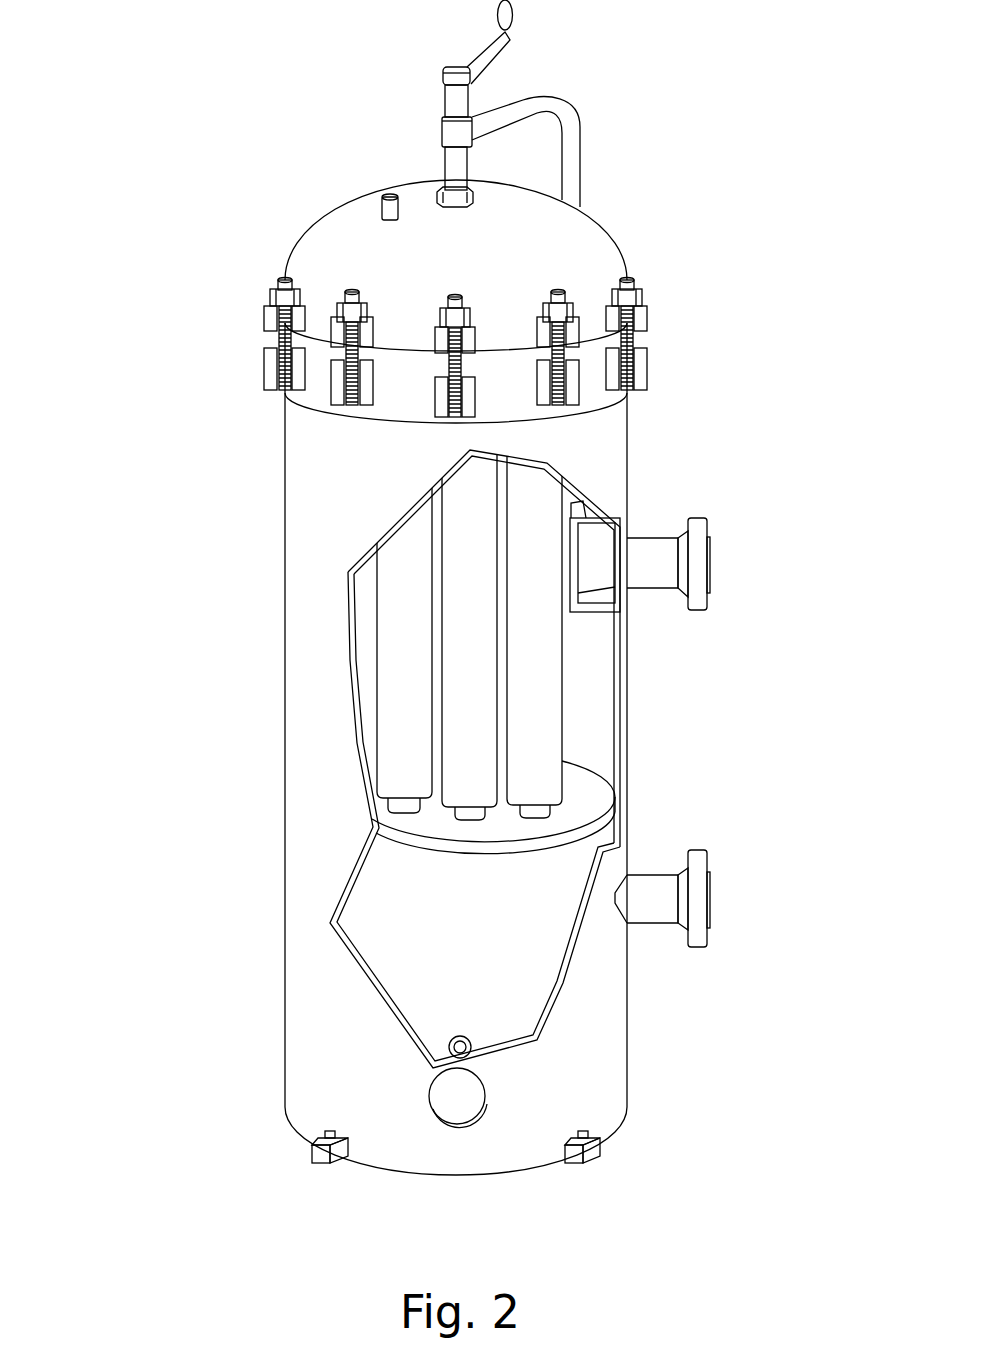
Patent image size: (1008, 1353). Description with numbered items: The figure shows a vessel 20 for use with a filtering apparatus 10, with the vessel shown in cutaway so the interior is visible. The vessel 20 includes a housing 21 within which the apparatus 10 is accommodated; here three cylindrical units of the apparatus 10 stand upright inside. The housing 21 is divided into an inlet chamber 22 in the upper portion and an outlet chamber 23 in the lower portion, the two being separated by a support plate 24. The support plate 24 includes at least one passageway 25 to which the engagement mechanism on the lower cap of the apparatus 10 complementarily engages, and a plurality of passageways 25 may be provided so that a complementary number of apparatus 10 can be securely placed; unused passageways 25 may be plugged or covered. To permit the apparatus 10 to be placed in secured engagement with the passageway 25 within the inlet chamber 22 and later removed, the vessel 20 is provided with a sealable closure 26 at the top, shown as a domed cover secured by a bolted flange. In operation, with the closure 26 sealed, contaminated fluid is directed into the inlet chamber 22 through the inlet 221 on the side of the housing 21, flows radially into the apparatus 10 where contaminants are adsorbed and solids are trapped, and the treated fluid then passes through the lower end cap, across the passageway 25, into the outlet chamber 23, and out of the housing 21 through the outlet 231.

The vessel 20 is at (240, 90).
The housing 21 is at (285, 490).
The inlet chamber 22 is at (590, 687).
The inlet 221 is at (709, 525).
The outlet chamber 23 is at (458, 970).
The outlet 231 is at (709, 853).
The support plate 24 is at (577, 773).
The passageway 25 is at (587, 817).
The sealable closure 26 is at (290, 245).
The apparatus 10 is at (395, 680).